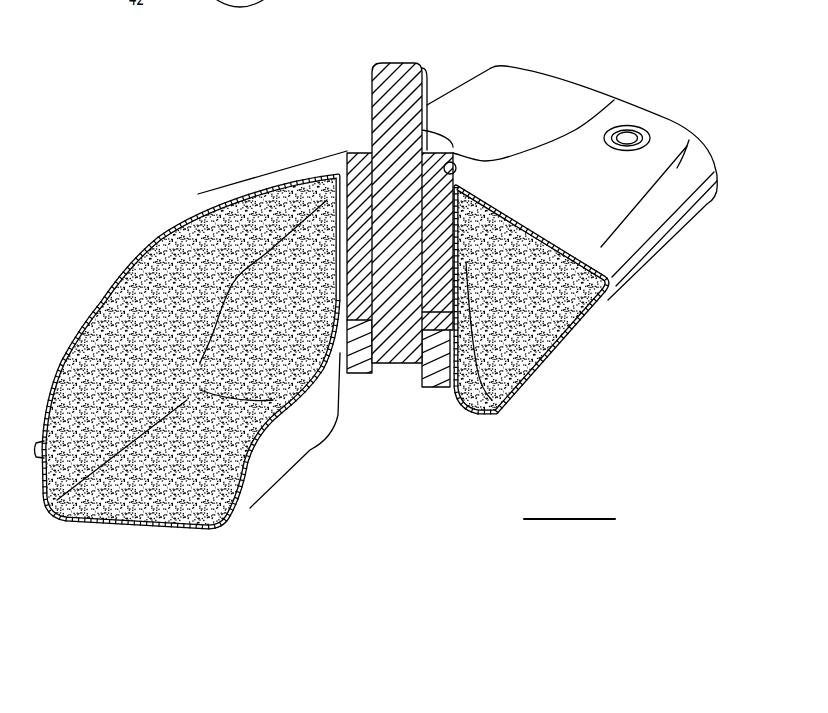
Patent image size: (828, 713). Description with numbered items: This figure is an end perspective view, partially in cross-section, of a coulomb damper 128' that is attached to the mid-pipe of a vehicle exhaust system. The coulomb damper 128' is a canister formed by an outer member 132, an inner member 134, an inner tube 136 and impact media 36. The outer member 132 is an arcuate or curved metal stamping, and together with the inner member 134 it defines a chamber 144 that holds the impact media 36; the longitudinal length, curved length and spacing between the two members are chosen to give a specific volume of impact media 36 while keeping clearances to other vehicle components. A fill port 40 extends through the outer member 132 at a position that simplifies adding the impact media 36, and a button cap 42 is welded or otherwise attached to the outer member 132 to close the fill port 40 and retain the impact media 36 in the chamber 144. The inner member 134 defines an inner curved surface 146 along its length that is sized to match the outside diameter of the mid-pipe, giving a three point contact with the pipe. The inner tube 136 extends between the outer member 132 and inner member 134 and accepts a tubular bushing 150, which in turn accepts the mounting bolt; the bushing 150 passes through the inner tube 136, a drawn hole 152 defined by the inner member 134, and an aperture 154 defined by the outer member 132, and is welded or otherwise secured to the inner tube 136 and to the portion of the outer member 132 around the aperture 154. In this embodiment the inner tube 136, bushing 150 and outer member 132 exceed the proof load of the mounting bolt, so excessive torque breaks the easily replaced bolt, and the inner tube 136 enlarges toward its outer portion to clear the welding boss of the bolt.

The coulomb damper 128' is at (391, 297).
The impact media 36 is at (158, 488).
The fill port 40 is at (630, 126).
The button cap 42 is at (636, 149).
The outer member 132 is at (521, 97).
The inner member 134 is at (273, 447).
The inner tube 136 is at (452, 300).
The chamber 144 is at (157, 322).
The inner curved surface 146 is at (260, 483).
The tubular bushing 150 is at (358, 157).
The drawn hole 152 is at (342, 356).
The aperture 154 is at (452, 185).